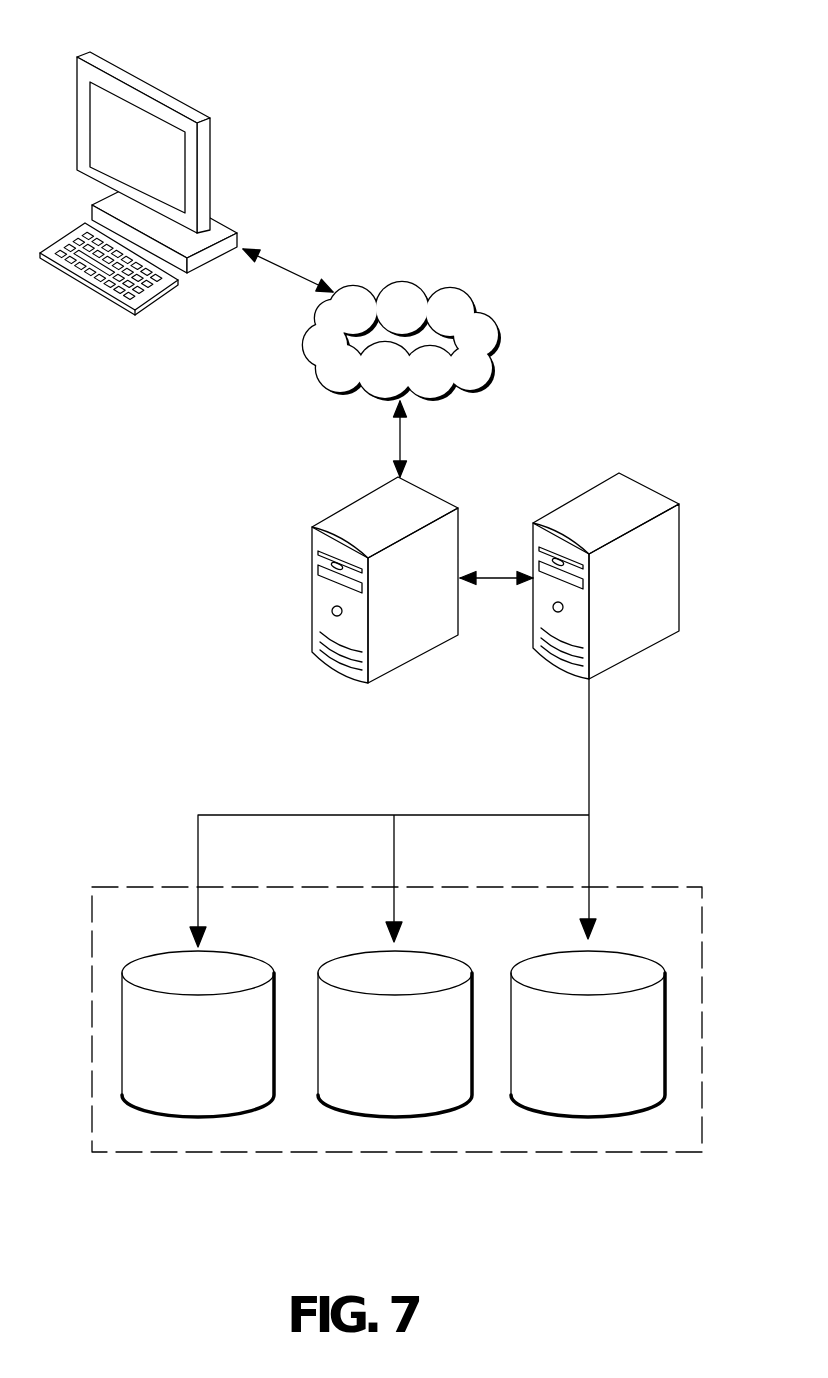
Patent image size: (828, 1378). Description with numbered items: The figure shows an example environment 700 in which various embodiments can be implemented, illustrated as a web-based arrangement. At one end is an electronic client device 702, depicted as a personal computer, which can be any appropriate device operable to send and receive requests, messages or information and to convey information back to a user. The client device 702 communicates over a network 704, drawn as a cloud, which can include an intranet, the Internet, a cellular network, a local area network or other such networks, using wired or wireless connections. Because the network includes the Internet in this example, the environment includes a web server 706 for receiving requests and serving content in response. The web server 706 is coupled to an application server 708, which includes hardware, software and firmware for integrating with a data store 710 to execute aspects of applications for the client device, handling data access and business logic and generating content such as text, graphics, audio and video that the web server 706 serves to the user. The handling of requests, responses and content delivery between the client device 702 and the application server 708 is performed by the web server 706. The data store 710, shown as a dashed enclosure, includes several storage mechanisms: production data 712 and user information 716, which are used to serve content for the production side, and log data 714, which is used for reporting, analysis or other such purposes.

The environment 700 is at (643, 342).
The electronic client device 702 is at (160, 84).
The network 704 is at (437, 289).
The web server 706 is at (312, 575).
The application server 708 is at (557, 670).
The data store 710 is at (128, 1152).
The production data 712 is at (194, 1116).
The log data 714 is at (396, 1116).
The user information 716 is at (587, 1115).